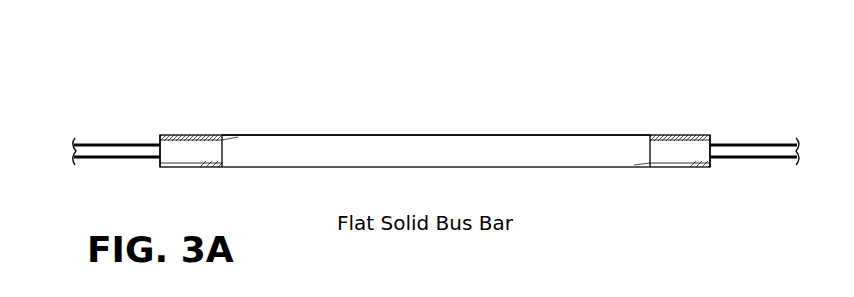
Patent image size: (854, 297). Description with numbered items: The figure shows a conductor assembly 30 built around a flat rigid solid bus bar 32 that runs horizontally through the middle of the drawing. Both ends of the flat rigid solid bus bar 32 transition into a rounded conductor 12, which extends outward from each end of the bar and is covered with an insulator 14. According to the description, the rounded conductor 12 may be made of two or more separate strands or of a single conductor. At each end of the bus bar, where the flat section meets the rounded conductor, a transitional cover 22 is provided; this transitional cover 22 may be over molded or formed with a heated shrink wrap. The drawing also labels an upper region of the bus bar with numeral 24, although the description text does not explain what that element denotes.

The conductor assembly 30 is at (120, 81).
The rounded conductor 12 is at (72, 152).
The insulator 14 is at (130, 143).
The transitional cover 22 is at (192, 135).
The flat rigid solid bus bar 32 is at (435, 135).
The flat upper surface of bus bar 24 is at (562, 135).